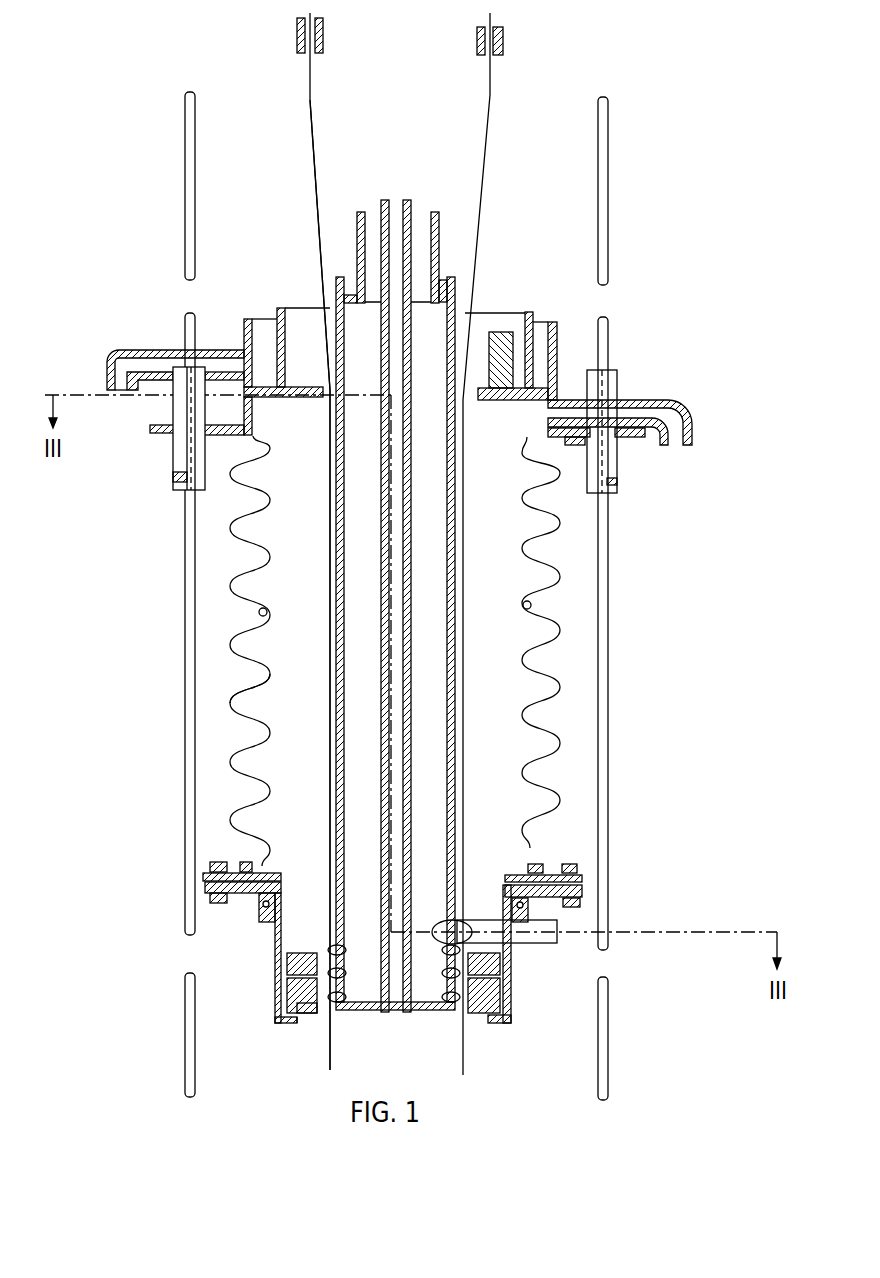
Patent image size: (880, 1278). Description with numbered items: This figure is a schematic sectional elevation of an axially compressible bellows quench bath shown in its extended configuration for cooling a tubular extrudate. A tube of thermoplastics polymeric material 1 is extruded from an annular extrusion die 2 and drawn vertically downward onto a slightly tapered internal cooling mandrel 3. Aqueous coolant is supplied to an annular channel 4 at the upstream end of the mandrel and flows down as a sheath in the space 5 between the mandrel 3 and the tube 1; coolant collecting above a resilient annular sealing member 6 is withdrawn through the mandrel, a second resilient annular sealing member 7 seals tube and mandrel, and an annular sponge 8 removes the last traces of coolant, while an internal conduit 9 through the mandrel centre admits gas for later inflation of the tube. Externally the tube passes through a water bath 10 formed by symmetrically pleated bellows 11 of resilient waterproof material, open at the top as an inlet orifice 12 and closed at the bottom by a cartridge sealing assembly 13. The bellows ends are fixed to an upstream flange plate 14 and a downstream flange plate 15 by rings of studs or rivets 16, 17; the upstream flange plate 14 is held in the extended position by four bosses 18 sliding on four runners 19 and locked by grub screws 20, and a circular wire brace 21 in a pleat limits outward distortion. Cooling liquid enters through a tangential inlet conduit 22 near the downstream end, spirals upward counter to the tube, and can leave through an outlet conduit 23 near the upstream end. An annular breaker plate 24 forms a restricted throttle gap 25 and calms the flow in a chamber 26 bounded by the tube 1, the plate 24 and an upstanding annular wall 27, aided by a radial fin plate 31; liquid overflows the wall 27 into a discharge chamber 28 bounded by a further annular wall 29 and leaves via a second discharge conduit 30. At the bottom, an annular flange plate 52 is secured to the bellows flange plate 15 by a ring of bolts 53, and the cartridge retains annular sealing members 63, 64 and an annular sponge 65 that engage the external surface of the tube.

The tube of thermoplastics polymeric material 1 is at (310, 100).
The annular extrusion die 2 is at (297, 33).
The internal cooling mandrel 3 is at (340, 641).
The annular channel 4 is at (355, 287).
The space 5 is at (333, 580).
The resilient annular sealing member 6 is at (493, 957).
The second resilient annular sealing member 7 is at (495, 980).
The annular sponge 8 is at (473, 1006).
The internal conduit 9 is at (393, 200).
The water bath 10 is at (258, 673).
The symmetrically pleated bellows 11 is at (228, 703).
The inlet orifice 12 is at (292, 303).
The cartridge sealing assembly 13 is at (265, 998).
The upstream flange plate 14 is at (642, 440).
The flange plate 15 is at (583, 878).
The ring of studs or rivets 16 is at (573, 443).
The ring of studs or rivets 17 is at (560, 866).
The bosses 18 is at (180, 471).
The runners 19 is at (185, 742).
The grub screws 20 is at (617, 483).
The circular wire brace 21 is at (533, 605).
The inlet conduit 22 is at (483, 920).
The outlet conduit 23 is at (693, 428).
The annular breaker plate 24 is at (300, 398).
The restricted throttle gap 25 is at (328, 392).
The chamber 26 is at (297, 345).
The upstanding annular wall 27 is at (533, 312).
The discharge chamber 28 is at (538, 343).
The further annular wall 29 is at (558, 355).
The second discharge conduit 30 is at (107, 377).
The fin plate 31 is at (505, 331).
The annular flange plate 52 is at (583, 891).
The ring of bolts 53 is at (583, 902).
The annular sealing member 63 is at (282, 962).
The annular sealing member 64 is at (282, 983).
The annular sponge 65 is at (313, 1008).